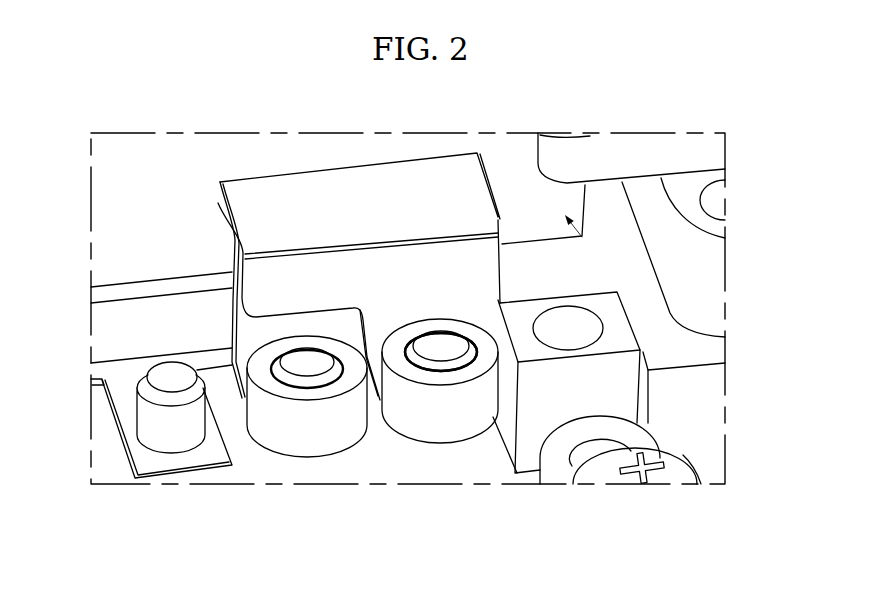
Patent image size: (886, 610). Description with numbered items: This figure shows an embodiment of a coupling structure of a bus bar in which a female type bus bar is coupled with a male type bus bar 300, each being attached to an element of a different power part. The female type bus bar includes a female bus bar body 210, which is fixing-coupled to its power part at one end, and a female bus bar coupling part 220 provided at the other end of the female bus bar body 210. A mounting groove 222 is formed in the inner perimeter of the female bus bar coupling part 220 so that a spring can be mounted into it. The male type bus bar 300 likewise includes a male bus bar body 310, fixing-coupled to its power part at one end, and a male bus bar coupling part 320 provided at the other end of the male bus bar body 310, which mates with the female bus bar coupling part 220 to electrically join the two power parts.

The female bus bar body 210 is at (530, 483).
The female bus bar coupling part 220 is at (320, 377).
The mounting groove 222 is at (600, 257).
The male type bus bar 300 is at (213, 490).
The male bus bar body 310 is at (123, 403).
The male bus bar coupling part 320 is at (413, 362).